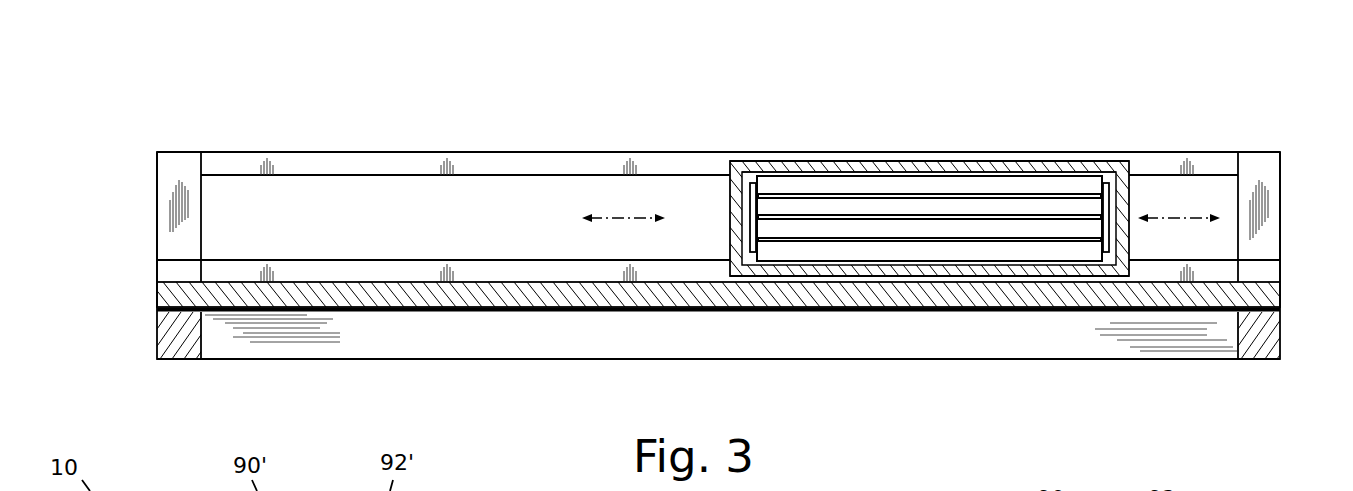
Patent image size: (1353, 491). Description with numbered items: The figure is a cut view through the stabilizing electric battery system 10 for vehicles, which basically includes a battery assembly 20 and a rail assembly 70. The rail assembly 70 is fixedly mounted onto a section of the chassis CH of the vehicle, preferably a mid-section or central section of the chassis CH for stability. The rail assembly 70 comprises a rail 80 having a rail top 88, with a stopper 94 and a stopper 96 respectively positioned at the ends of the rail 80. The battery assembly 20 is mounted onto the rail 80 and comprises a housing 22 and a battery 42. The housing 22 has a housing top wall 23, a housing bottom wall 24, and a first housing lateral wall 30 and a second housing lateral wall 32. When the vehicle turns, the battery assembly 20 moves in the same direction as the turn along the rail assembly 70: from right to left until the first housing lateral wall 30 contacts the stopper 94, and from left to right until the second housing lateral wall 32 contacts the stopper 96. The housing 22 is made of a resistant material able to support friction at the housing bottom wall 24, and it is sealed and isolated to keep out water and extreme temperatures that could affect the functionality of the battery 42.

The stabilizing electric battery system 10 is at (131, 113).
The battery assembly 20 is at (1101, 129).
The housing 22 is at (785, 148).
The housing top wall 23 is at (993, 162).
The housing bottom wall 24 is at (912, 273).
The first housing lateral wall 30 is at (1132, 195).
The second housing lateral wall 32 is at (727, 195).
The battery 42 is at (923, 208).
The rail assembly 70 is at (297, 139).
The rail 80 is at (1213, 275).
The rail top 88 is at (482, 153).
The stopper 94 is at (1272, 173).
The stopper 96 is at (173, 242).
The chassis CH is at (145, 298).